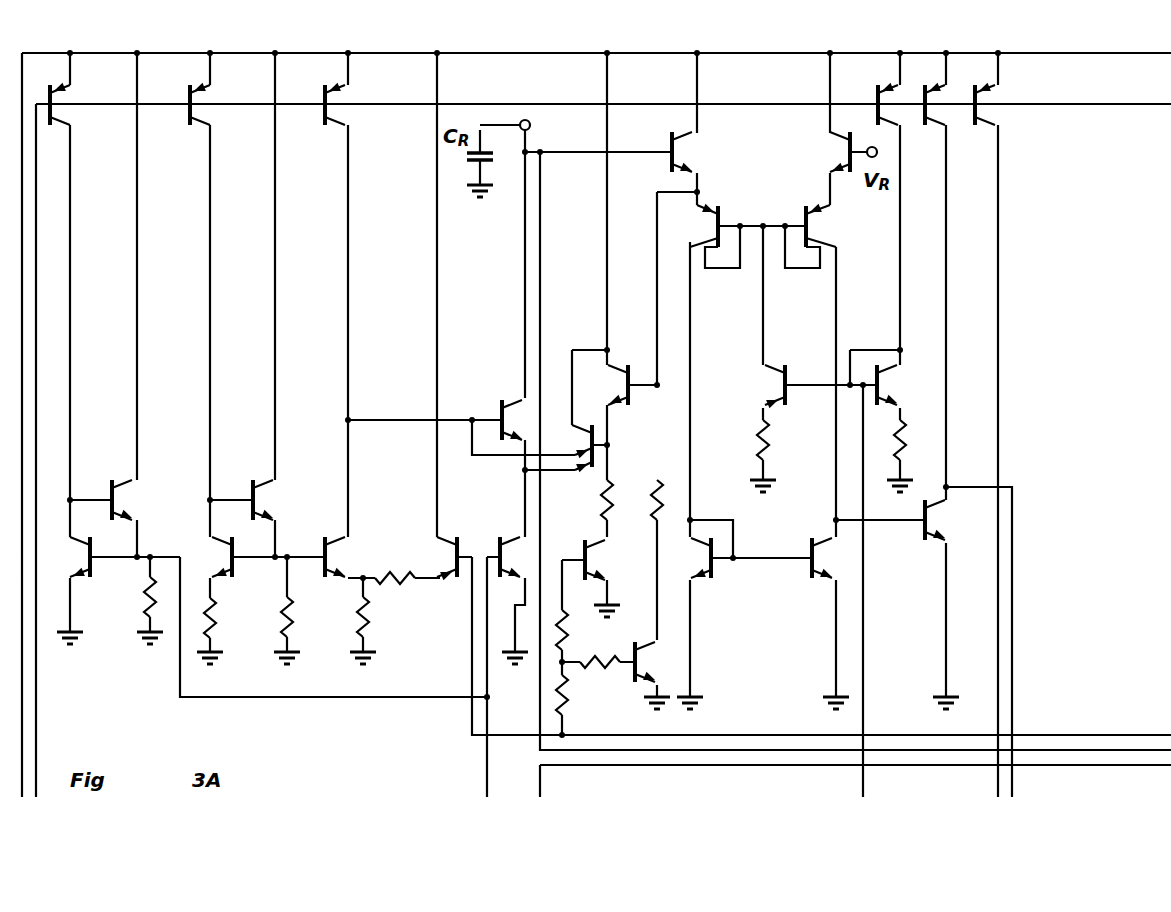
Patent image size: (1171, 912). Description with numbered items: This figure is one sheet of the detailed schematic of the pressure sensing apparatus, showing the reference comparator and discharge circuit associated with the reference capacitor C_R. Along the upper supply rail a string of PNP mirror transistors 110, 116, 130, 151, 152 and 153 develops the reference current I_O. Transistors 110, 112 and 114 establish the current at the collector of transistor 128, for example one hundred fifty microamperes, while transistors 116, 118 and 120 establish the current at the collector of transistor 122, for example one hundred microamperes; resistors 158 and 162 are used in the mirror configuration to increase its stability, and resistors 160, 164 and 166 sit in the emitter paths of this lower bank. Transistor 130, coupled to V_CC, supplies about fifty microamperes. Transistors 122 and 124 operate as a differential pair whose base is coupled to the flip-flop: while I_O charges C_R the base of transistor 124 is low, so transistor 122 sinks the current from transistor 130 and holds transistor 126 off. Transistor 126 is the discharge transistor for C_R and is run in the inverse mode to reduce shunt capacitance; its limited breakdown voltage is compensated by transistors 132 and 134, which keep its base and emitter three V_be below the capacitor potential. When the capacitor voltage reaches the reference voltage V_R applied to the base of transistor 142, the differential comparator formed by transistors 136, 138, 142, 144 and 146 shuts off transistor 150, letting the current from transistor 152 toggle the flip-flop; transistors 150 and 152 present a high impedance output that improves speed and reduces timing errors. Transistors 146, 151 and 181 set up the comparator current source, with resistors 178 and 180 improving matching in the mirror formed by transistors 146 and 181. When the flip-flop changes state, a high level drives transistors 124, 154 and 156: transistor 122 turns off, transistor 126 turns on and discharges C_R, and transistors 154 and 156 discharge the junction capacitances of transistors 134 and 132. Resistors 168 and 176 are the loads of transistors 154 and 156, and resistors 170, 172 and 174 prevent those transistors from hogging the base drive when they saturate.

The transistor 110 is at (85, 95).
The transistor 112 is at (108, 578).
The transistor 114 is at (136, 494).
The transistor 116 is at (215, 95).
The transistor 118 is at (215, 548).
The transistor 120 is at (276, 494).
The transistor 122 is at (340, 555).
The transistor 124 is at (441, 558).
The transistor 126 is at (494, 406).
The transistor 128 is at (492, 546).
The transistor 130 is at (360, 95).
The transistor 132 is at (586, 474).
The transistor 134 is at (632, 367).
The transistor 136 is at (702, 149).
The transistor 138 is at (730, 212).
The transistor 142 is at (825, 149).
The transistor 144 is at (792, 212).
The transistor 146 is at (792, 367).
The transistor 150 is at (968, 520).
The transistor 151 is at (862, 95).
The transistor 152 is at (950, 95).
The transistor 153 is at (1010, 95).
The transistor 154 is at (600, 560).
The transistor 156 is at (628, 696).
The resistor 158 is at (140, 605).
The resistor 160 is at (218, 630).
The resistor 162 is at (296, 630).
The resistor 164 is at (372, 630).
The resistor 166 is at (410, 586).
The resistor 168 is at (615, 494).
The resistor 170 is at (585, 619).
The resistor 172 is at (580, 668).
The resistor 174 is at (590, 720).
The resistor 176 is at (653, 524).
The resistor 178 is at (770, 445).
The resistor 180 is at (908, 446).
The transistor 181 is at (900, 367).